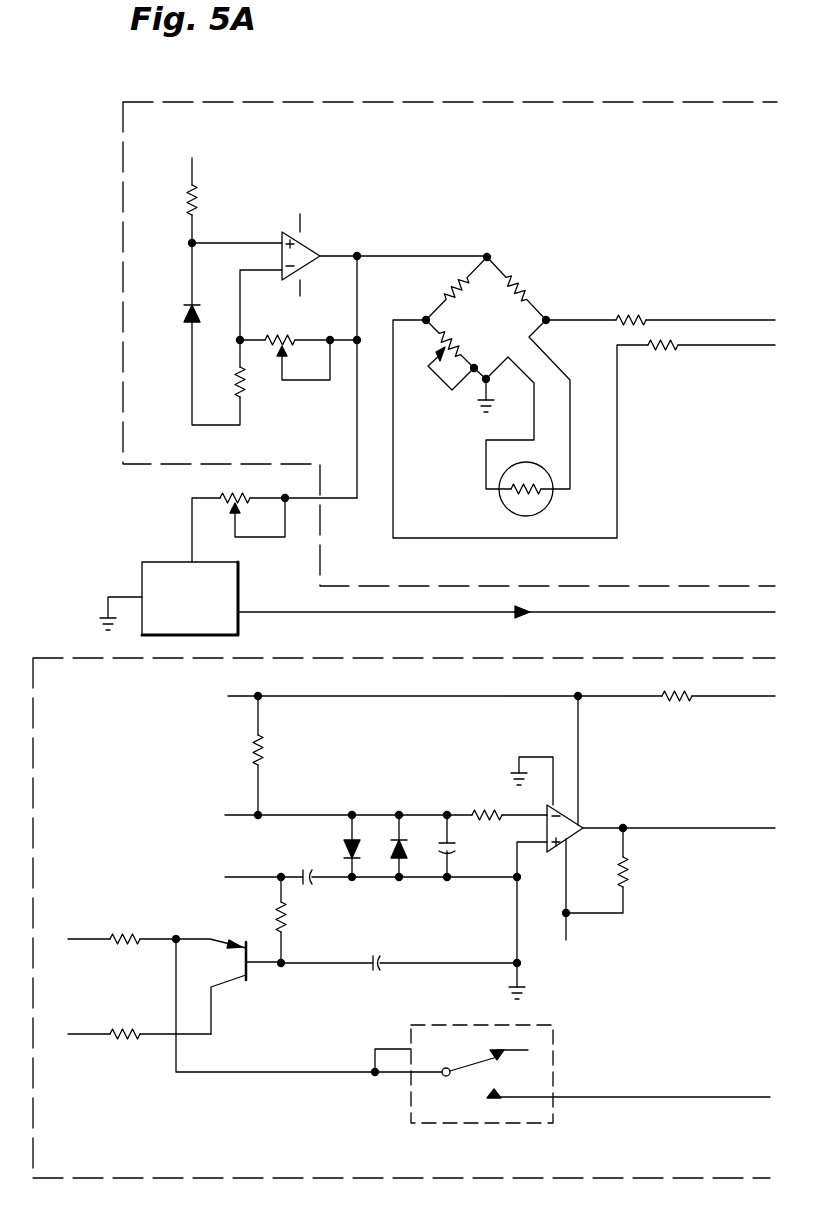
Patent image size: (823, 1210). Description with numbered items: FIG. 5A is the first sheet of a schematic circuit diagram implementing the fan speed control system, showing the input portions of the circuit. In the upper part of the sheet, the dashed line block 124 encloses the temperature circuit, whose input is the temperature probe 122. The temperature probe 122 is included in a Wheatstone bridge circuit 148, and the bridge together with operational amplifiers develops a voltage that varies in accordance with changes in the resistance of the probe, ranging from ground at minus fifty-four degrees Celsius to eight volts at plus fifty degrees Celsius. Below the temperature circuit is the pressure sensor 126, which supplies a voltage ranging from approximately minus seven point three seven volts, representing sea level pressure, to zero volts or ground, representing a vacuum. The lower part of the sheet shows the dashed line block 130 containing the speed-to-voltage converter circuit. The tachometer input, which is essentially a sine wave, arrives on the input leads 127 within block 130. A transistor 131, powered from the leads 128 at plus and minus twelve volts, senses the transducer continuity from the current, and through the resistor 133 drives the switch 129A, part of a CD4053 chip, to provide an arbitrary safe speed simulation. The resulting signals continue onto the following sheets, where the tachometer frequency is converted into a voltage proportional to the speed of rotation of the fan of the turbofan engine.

The dashed line block 124 is at (413, 100).
The Wheatstone bridge circuit 148 is at (502, 332).
The temperature probe 122 is at (500, 498).
The pressure sensor 126 is at (158, 560).
The dashed line block 130 is at (62, 657).
The resistor 133 is at (263, 744).
The input leads 127 is at (238, 813).
The leads 128 is at (93, 935).
The transistor 131 is at (232, 983).
The switch 129A is at (553, 1052).